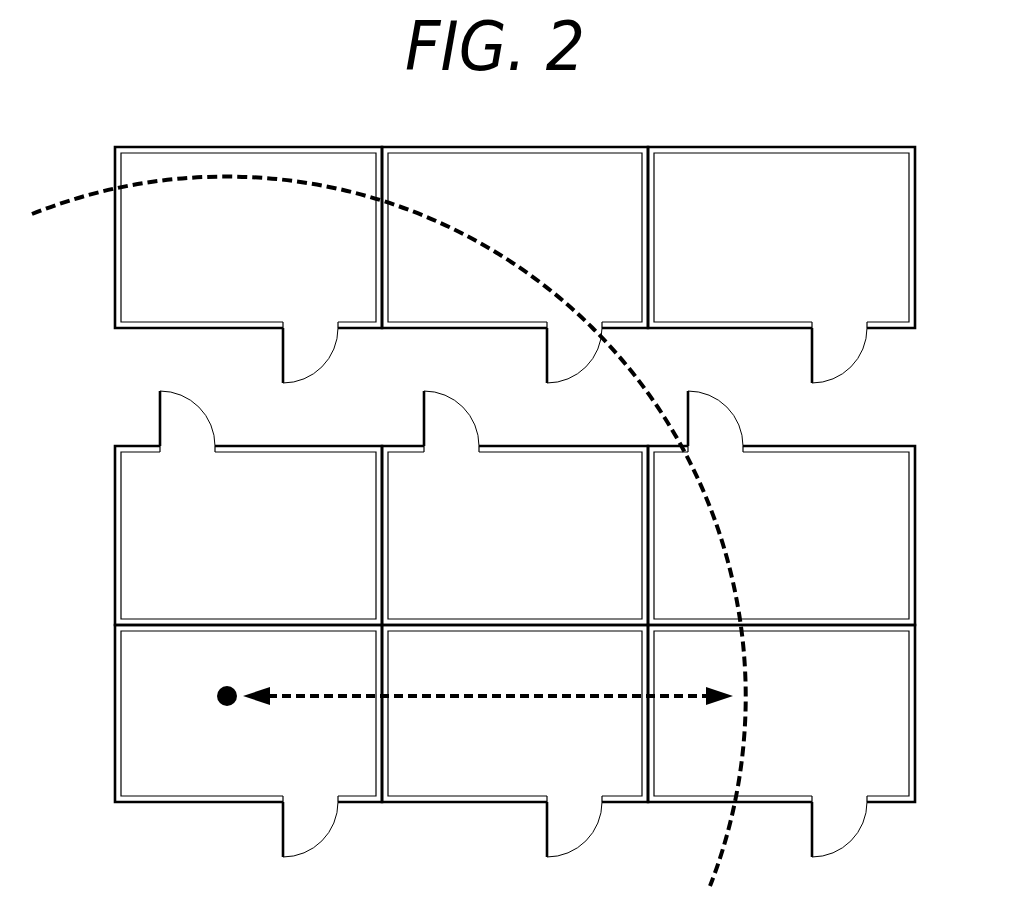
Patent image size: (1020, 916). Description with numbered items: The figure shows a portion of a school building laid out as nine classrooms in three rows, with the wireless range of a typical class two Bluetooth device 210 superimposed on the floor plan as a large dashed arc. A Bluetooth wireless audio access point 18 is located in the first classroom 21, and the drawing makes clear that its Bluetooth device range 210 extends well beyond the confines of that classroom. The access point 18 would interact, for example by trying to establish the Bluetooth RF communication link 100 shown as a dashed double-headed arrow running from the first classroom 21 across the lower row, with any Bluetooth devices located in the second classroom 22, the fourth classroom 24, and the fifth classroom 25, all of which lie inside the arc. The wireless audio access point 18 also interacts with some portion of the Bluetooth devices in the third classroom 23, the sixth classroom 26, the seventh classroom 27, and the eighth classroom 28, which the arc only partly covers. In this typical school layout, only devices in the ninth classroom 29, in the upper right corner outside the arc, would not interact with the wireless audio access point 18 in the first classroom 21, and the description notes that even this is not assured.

The wireless audio access point 18 is at (227, 688).
The first classroom 21 is at (179, 780).
The second classroom 22 is at (443, 780).
The third classroom 23 is at (846, 780).
The fourth classroom 24 is at (179, 607).
The fifth classroom 25 is at (443, 607).
The sixth classroom 26 is at (846, 607).
The seventh classroom 27 is at (179, 310).
The eighth classroom 28 is at (443, 310).
The ninth classroom 29 is at (846, 310).
The Bluetooth RF communication link 100 is at (632, 699).
The range of a class 2 Bluetooth device 210 is at (719, 842).